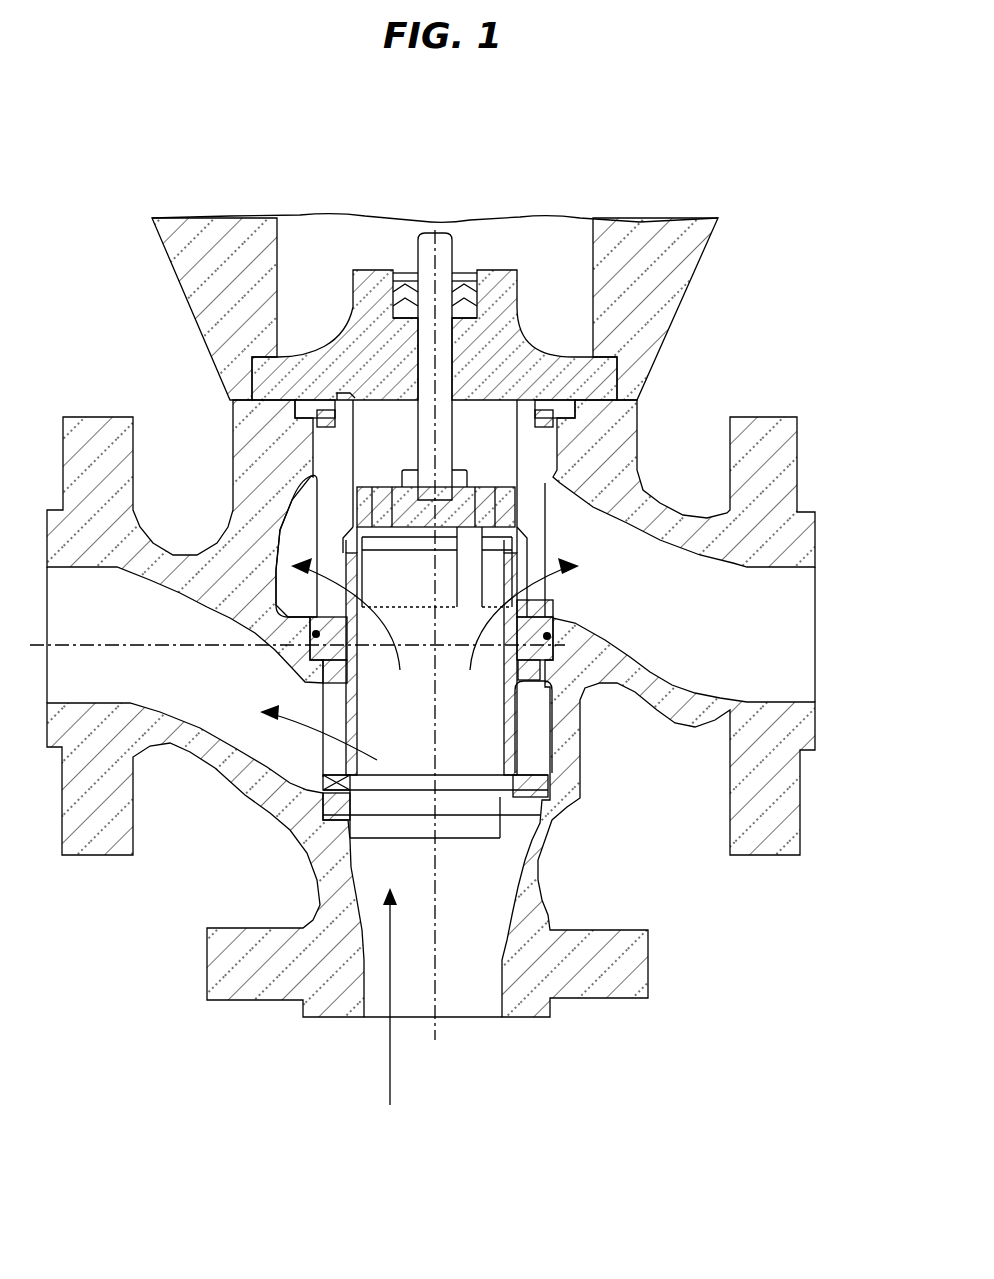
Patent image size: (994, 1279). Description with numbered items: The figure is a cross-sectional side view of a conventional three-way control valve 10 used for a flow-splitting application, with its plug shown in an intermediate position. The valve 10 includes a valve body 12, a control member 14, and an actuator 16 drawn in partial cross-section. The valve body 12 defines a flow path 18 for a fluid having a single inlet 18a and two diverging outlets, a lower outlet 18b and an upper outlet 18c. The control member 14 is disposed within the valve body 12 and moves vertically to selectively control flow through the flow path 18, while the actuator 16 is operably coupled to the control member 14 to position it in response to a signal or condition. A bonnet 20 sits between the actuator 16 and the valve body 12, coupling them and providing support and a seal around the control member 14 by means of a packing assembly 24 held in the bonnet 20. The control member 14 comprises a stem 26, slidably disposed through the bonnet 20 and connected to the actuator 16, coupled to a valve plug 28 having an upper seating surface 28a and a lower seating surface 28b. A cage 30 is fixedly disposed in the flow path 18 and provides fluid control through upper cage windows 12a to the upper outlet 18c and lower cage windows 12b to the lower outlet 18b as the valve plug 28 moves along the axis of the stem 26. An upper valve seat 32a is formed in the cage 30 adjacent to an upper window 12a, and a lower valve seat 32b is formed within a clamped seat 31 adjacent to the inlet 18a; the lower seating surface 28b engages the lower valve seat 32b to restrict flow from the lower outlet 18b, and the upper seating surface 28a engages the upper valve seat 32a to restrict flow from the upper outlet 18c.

The three-way control valve 10 is at (793, 227).
The valve body 12 is at (621, 1012).
The upper cage window 12a is at (343, 547).
The lower cage window 12b is at (333, 700).
The control member 14 is at (434, 235).
The actuator 16 is at (658, 188).
The flow path 18 is at (452, 1000).
The inlet 18a is at (487, 926).
The lower outlet 18b is at (160, 678).
The upper outlet 18c is at (740, 634).
The bonnet 20 is at (283, 380).
The packing assembly 24 is at (400, 270).
The stem 26 is at (466, 235).
The valve plug 28 is at (540, 745).
The upper seating surface 28a is at (530, 608).
The lower seating surface 28b is at (512, 815).
The cage 30 is at (340, 447).
The clamped seat 31 is at (300, 795).
The upper valve seat 32a is at (300, 540).
The lower valve seat 32b is at (330, 830).